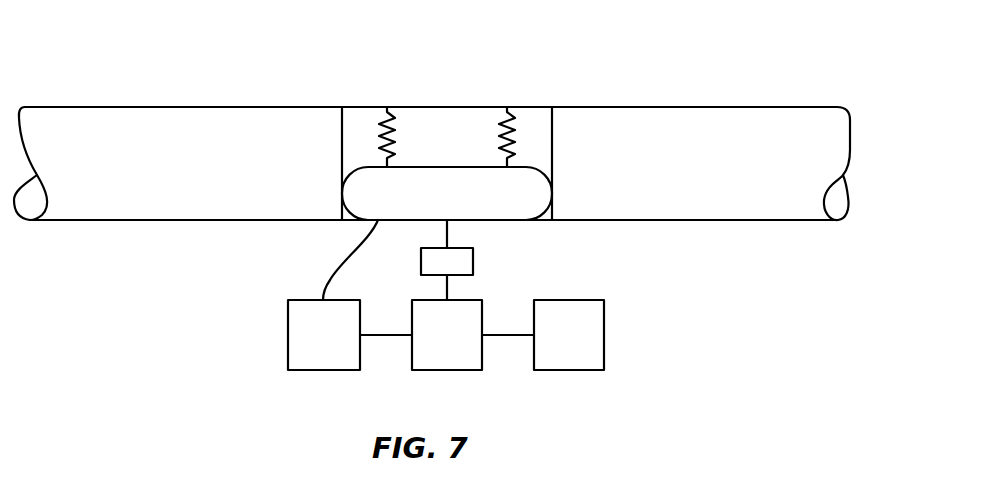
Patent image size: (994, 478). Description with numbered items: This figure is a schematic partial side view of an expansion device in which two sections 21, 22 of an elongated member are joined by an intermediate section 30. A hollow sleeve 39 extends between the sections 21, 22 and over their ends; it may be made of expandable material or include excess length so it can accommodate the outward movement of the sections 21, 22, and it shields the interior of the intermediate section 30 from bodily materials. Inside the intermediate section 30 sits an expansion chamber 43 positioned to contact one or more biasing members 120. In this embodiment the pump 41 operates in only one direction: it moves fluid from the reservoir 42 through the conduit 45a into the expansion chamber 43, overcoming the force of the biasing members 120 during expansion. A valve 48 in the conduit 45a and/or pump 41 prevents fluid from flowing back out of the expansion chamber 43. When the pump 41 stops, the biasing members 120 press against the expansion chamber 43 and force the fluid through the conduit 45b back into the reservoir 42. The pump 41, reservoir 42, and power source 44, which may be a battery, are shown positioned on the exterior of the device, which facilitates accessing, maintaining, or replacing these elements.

The section 21 is at (101, 173).
The section 22 is at (809, 173).
The intermediate section 30 is at (537, 107).
The sleeve 39 is at (305, 107).
The biasing members 120 is at (500, 127).
The expansion chamber 43 is at (458, 202).
The valve 48 is at (434, 272).
The pump 41 is at (434, 346).
The reservoir 42 is at (311, 346).
The power source 44 is at (556, 346).
The conduit 45a is at (448, 290).
The conduit 45b is at (340, 268).